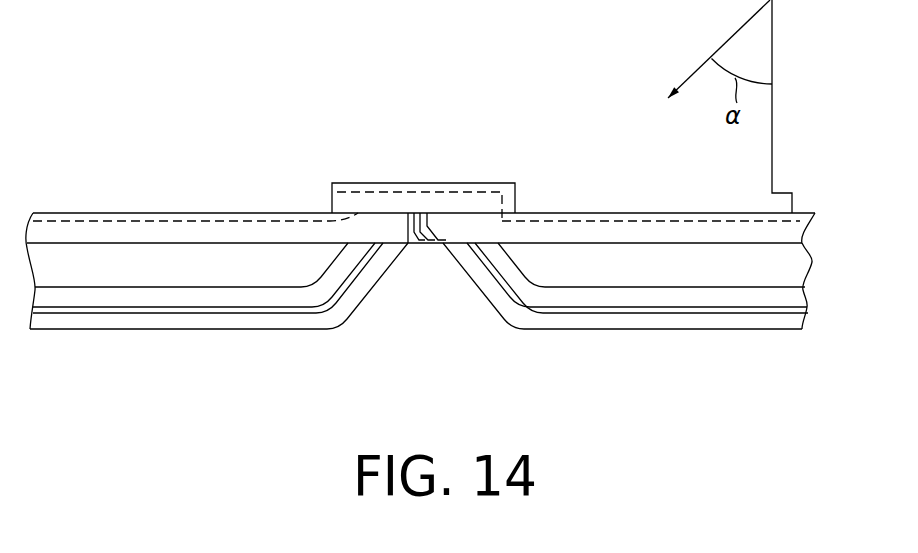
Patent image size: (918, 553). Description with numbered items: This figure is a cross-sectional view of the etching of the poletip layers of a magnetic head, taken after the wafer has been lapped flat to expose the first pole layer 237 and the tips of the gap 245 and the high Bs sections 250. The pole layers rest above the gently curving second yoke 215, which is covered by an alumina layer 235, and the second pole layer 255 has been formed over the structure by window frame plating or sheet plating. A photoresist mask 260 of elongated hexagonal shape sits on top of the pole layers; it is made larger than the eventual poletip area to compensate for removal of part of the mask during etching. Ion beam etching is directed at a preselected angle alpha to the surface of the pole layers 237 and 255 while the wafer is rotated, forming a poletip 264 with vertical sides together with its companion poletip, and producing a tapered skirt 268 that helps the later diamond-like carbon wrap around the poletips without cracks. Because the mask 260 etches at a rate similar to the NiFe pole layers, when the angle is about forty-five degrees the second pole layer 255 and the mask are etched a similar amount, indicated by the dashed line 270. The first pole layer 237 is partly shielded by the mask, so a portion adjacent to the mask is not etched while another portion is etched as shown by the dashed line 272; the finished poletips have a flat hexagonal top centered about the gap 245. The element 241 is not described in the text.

The second yoke 215 is at (820, 287).
The alumina layer 235 is at (747, 268).
The first pole layer 237 is at (82, 243).
The first via 241 is at (417, 212).
The gap 245 is at (426, 213).
The high Bs sections 250 is at (423, 213).
The second pole layer 255 is at (673, 233).
The photoresist mask 260 is at (508, 183).
The poletip 264 is at (385, 212).
The tapered skirt 268 is at (358, 217).
The dashed line 270 is at (611, 220).
The dashed line 272 is at (281, 221).